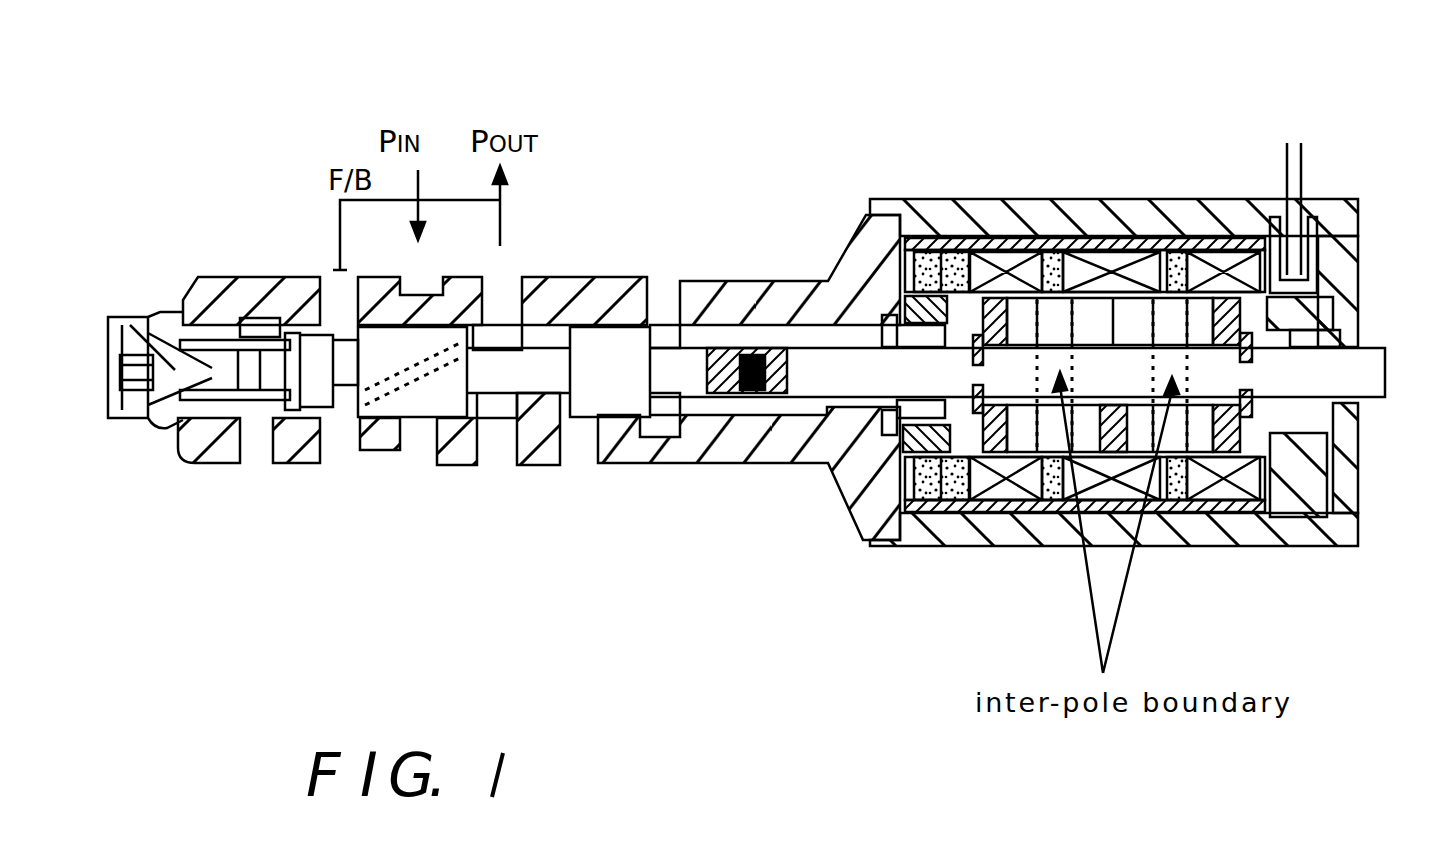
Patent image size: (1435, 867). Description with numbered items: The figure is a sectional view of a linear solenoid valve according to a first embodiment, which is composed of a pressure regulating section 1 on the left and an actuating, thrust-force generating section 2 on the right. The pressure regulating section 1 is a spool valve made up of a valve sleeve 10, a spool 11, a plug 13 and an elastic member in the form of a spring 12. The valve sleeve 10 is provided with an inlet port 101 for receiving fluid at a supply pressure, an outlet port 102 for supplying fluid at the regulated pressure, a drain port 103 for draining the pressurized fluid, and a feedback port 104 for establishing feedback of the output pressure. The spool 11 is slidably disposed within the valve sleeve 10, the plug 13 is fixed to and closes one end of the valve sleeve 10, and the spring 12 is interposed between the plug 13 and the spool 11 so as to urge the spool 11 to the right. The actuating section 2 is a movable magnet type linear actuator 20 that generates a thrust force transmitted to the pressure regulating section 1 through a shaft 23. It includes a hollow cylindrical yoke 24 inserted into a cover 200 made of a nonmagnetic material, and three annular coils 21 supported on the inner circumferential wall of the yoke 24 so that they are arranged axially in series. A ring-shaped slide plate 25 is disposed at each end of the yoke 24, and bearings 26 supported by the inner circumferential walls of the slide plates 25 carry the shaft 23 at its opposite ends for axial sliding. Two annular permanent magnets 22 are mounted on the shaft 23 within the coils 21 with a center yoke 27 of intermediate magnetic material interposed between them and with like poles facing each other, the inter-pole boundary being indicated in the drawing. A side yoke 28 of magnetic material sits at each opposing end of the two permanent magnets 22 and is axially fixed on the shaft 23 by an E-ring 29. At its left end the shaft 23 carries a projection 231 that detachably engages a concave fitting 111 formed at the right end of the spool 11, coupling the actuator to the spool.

The pressure regulating section 1 is at (633, 120).
The actuating section 2 is at (1044, 150).
The valve sleeve 10 is at (705, 468).
The spool 11 is at (620, 395).
The spring 12 is at (267, 400).
The plug 13 is at (160, 422).
The linear actuator 20 is at (1203, 552).
The coils 21 is at (1200, 225).
The permanent magnets 22 is at (1037, 455).
The shaft 23 is at (1030, 392).
The yoke 24 is at (1000, 240).
The slide plate 25 is at (907, 307).
The bearings 26 is at (885, 548).
The center yoke 27 is at (1112, 455).
The side yoke 28 is at (988, 452).
The E-ring 29 is at (950, 237).
The inlet port 101 is at (420, 290).
The outlet port 102 is at (500, 308).
The drain port 103 is at (590, 440).
The feedback port 104 is at (335, 295).
The concave fitting 111 is at (748, 350).
The cover 200 is at (1100, 225).
The projection 231 is at (752, 398).